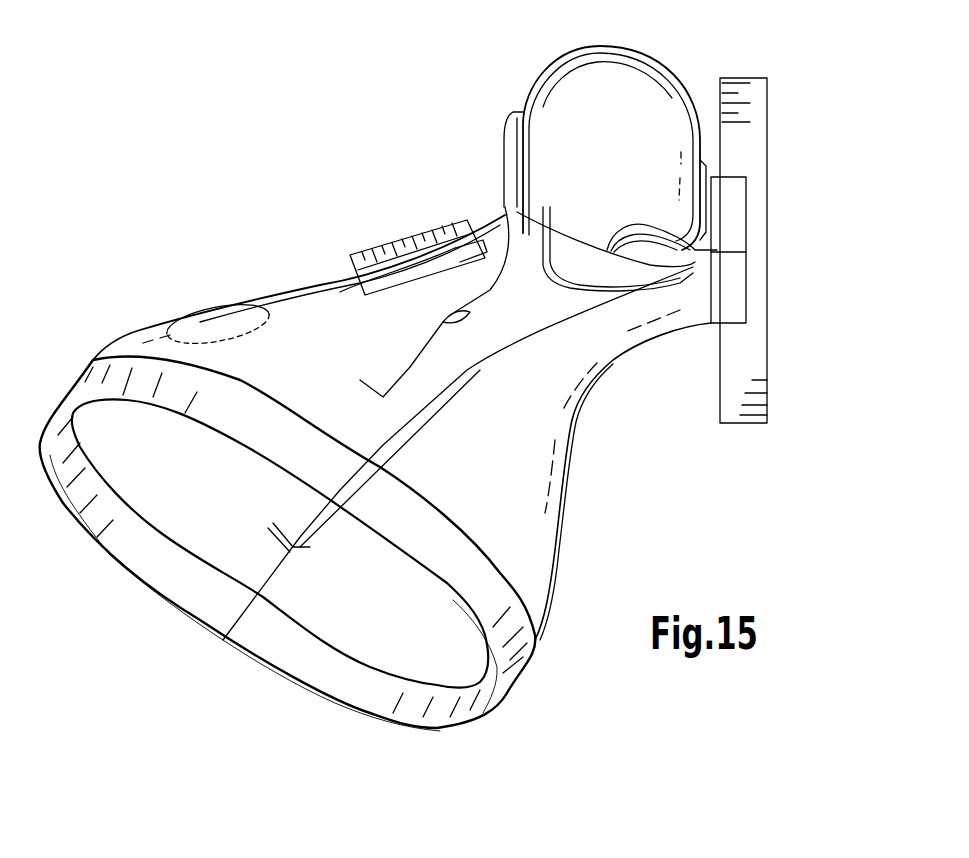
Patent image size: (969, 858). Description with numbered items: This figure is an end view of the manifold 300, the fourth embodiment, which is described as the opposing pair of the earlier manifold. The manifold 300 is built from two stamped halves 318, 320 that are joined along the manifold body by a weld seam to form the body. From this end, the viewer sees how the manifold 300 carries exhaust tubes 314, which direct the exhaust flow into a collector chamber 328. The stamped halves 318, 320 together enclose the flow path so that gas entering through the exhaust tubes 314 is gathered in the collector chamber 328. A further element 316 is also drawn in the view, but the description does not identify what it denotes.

The manifold 300 is at (202, 232).
The exhaust tubes 314 is at (650, 97).
The ruler 316 is at (757, 128).
The stamped half 318 is at (320, 318).
The stamped half 320 is at (522, 510).
The collector chamber 328 is at (383, 613).